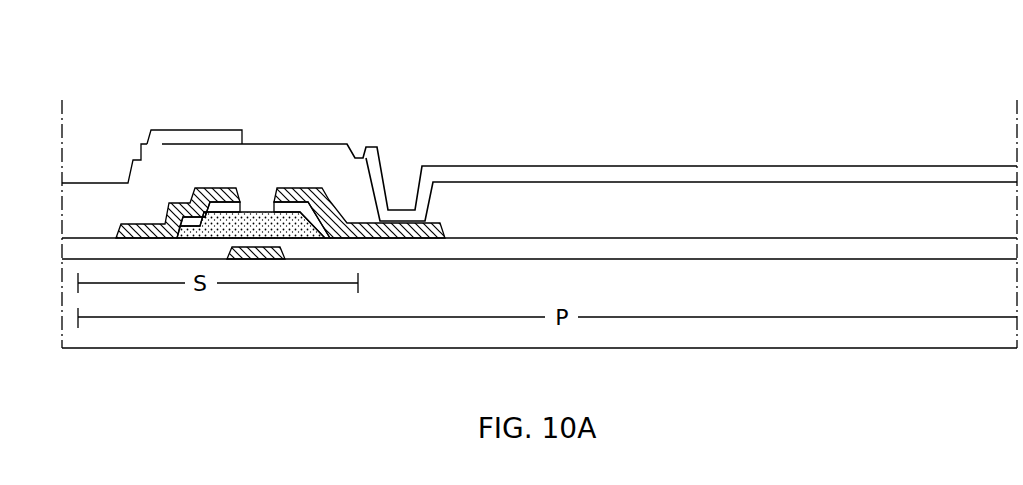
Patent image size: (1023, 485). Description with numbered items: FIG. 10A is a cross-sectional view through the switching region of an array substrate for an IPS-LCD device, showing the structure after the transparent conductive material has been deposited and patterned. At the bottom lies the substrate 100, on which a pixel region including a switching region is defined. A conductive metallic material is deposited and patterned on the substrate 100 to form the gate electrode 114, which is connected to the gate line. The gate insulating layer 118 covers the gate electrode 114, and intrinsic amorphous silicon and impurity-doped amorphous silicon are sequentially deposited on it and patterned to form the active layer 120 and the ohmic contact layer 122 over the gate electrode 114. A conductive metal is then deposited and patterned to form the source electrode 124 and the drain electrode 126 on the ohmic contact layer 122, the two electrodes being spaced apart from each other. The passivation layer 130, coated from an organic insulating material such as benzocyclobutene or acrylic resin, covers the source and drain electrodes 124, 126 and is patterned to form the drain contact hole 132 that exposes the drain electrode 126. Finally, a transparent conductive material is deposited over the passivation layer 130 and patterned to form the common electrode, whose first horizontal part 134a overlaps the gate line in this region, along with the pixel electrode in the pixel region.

The substrate 100 is at (981, 300).
The gate electrode 114 is at (254, 247).
The gate insulating layer 118 is at (547, 246).
The active layer 120 is at (337, 213).
The ohmic contact layer 122 is at (306, 200).
The source electrode 124 is at (202, 186).
The drain electrode 126 is at (291, 188).
The passivation layer 130 is at (707, 166).
The drain contact hole 132 is at (402, 173).
The first horizontal part 134a is at (197, 135).